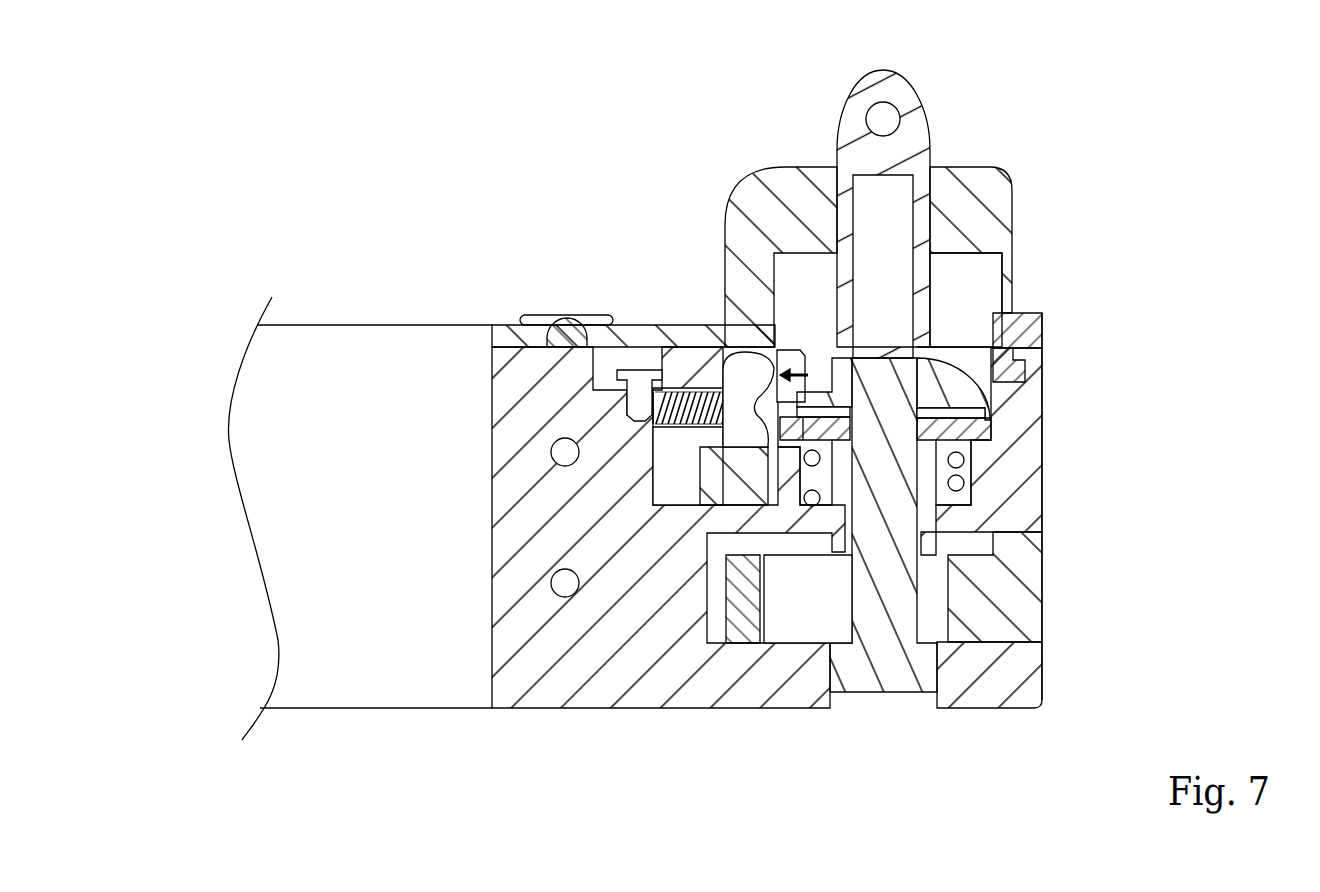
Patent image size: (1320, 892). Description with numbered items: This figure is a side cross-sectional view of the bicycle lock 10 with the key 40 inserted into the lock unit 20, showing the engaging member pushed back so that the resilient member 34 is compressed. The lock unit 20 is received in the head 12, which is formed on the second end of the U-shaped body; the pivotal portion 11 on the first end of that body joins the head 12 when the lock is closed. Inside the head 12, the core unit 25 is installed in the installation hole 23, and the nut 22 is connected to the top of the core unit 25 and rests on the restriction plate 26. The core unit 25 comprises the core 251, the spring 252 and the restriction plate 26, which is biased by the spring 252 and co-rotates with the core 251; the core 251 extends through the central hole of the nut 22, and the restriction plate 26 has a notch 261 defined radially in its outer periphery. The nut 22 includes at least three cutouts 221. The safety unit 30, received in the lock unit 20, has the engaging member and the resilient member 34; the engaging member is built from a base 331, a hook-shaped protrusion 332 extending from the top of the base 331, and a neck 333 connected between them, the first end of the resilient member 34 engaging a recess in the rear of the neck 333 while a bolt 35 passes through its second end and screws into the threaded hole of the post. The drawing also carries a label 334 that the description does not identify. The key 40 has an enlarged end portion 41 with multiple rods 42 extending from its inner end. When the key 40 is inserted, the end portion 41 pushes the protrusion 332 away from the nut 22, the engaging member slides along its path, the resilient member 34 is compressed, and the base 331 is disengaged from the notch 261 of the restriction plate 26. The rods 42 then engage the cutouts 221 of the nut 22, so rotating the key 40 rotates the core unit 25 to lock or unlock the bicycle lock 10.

The bicycle lock 10 is at (343, 322).
The pivotal portion 11 is at (1030, 627).
The head 12 is at (1030, 498).
The lock unit 20 is at (1117, 264).
The nut 22 is at (963, 395).
The cutouts 221 is at (824, 355).
The installation hole 23 is at (960, 327).
The core unit 25 is at (925, 519).
The core 251 is at (905, 600).
The spring 252 is at (956, 483).
The restriction plate 26 is at (977, 432).
The notch 261 is at (808, 500).
The safety unit 30 is at (608, 215).
The base 331 is at (735, 500).
The protrusion 332 is at (743, 352).
The neck 333 is at (740, 432).
The spring seat 334 is at (718, 408).
The resilient member 34 is at (693, 398).
The bolt 35 is at (640, 368).
The key 40 is at (912, 80).
The end portion 41 is at (1000, 346).
The rods 42 is at (793, 248).